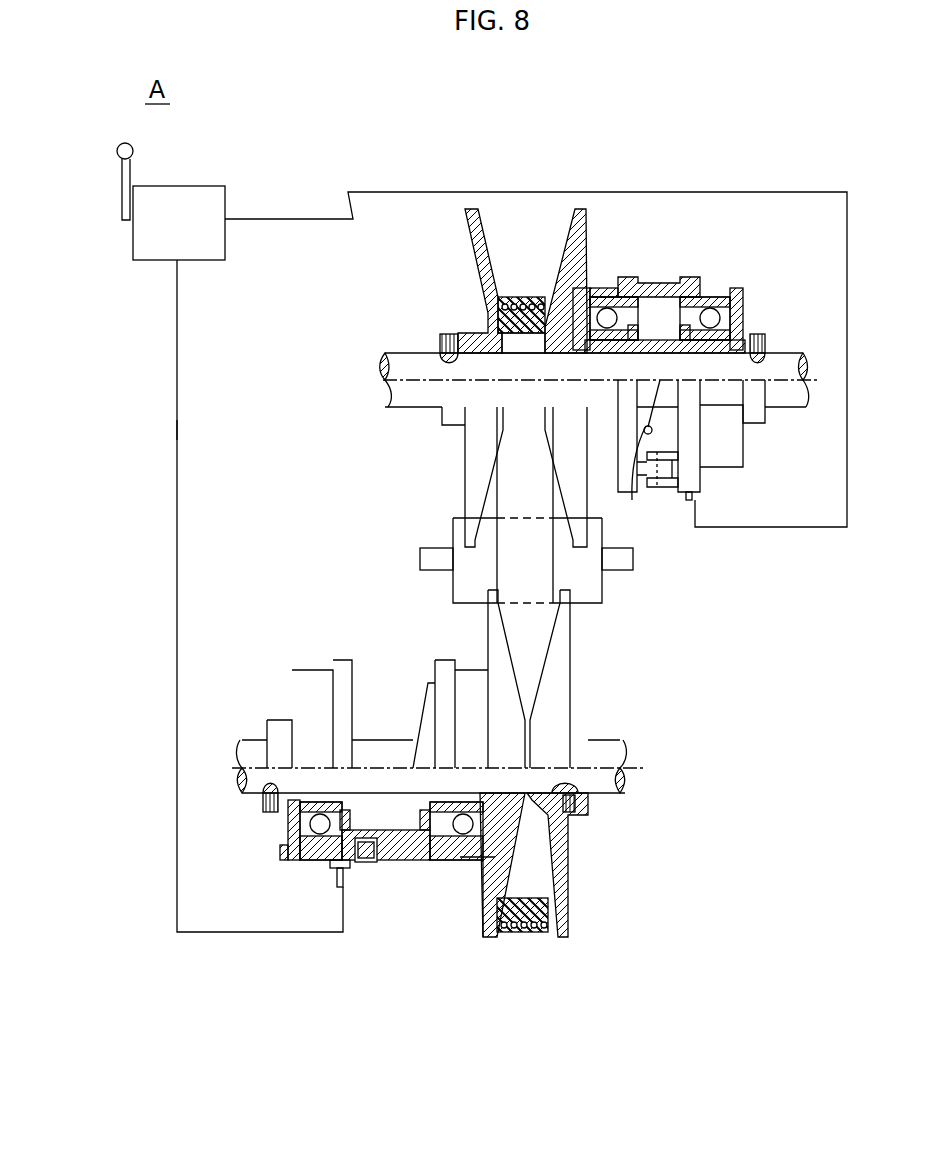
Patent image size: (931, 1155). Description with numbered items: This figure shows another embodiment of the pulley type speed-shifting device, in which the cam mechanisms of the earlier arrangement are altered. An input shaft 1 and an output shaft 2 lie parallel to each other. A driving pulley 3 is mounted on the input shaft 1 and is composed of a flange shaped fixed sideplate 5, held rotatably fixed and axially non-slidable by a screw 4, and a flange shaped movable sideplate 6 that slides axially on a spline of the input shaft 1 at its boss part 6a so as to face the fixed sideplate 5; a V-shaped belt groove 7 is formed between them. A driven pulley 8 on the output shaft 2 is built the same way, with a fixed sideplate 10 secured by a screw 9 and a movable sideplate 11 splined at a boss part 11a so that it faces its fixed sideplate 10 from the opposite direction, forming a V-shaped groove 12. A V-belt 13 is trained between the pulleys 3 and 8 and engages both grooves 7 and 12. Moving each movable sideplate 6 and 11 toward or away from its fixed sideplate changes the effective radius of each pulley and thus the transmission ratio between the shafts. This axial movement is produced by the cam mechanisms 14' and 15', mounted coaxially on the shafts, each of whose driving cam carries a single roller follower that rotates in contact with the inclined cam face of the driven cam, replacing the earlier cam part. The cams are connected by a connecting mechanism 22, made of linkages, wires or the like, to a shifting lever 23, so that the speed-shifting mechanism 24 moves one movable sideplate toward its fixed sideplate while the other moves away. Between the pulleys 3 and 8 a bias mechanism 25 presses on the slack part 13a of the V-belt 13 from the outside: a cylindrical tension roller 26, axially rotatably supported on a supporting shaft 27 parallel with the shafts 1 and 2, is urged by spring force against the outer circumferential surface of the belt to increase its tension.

The input shaft 1 is at (803, 405).
The output shaft 2 is at (622, 792).
The driving pulley 3 is at (510, 340).
The screw 4 is at (443, 335).
The fixed sideplate 5 is at (462, 217).
The movable sideplate 6 is at (582, 208).
The boss part 6a is at (598, 350).
The V-shaped belt groove 7 is at (563, 258).
The driven pulley 8 is at (545, 790).
The screw 9 is at (572, 817).
The fixed sideplate 10 is at (569, 869).
The movable sideplate 11 is at (488, 940).
The boss part 11a is at (477, 780).
The V-shaped groove 12 is at (540, 902).
The V-belt 13 is at (558, 580).
The slack part 13a is at (557, 568).
The cam mechanism 14' is at (696, 399).
The cam mechanism 15' is at (351, 845).
The connecting mechanism 22 is at (212, 186).
The shifting lever 23 is at (133, 162).
The speed-shifting mechanism 24 is at (172, 428).
The bias mechanism 25 is at (416, 562).
The tension roller 26 is at (603, 584).
The supporting shaft 27 is at (443, 546).